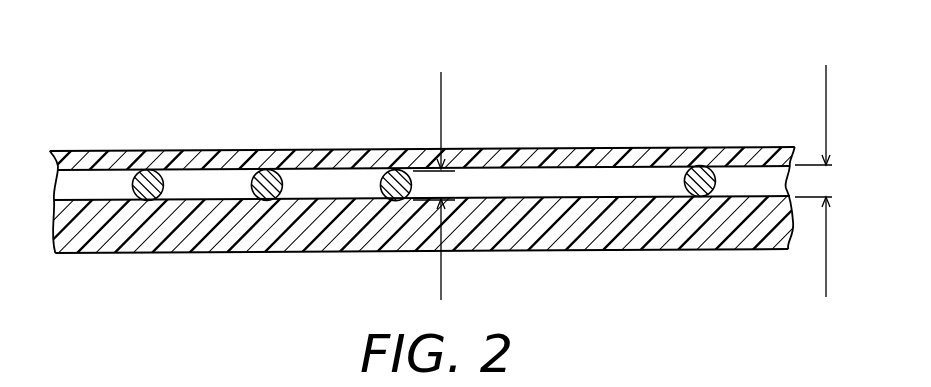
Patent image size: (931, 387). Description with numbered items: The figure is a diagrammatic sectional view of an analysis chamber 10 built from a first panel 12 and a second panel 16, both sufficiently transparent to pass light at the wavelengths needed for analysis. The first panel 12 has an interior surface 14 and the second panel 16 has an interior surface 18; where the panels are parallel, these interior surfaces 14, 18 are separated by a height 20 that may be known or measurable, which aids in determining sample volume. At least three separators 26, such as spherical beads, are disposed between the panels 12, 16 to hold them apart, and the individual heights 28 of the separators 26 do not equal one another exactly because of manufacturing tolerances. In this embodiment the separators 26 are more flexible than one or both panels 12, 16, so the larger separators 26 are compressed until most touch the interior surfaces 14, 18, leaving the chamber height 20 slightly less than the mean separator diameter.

The analysis chamber 10 is at (429, 193).
The first panel 12 is at (158, 150).
The interior surface 14 is at (643, 165).
The second panel 16 is at (153, 253).
The interior surface 18 is at (583, 193).
The height 20 is at (824, 108).
The separators 26 is at (168, 183).
The heights of the separators 28 is at (441, 108).